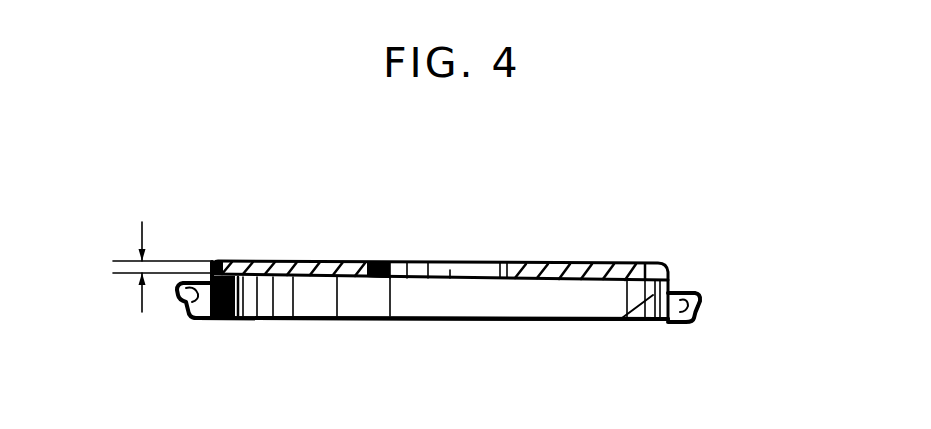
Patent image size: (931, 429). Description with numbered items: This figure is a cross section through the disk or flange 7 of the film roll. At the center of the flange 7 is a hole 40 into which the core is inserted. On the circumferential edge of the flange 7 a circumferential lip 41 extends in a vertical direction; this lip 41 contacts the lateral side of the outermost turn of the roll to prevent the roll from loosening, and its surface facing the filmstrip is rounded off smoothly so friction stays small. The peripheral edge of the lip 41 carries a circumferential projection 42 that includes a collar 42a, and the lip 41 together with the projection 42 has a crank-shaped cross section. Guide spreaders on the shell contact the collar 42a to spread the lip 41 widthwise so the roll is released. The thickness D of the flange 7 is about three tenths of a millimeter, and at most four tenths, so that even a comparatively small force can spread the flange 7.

The flange 7 is at (585, 238).
The hole 40 is at (383, 265).
The circumferential lip 41 is at (622, 327).
The circumferential projection 42 is at (673, 327).
The collar 42a is at (692, 280).
The thickness D is at (143, 262).